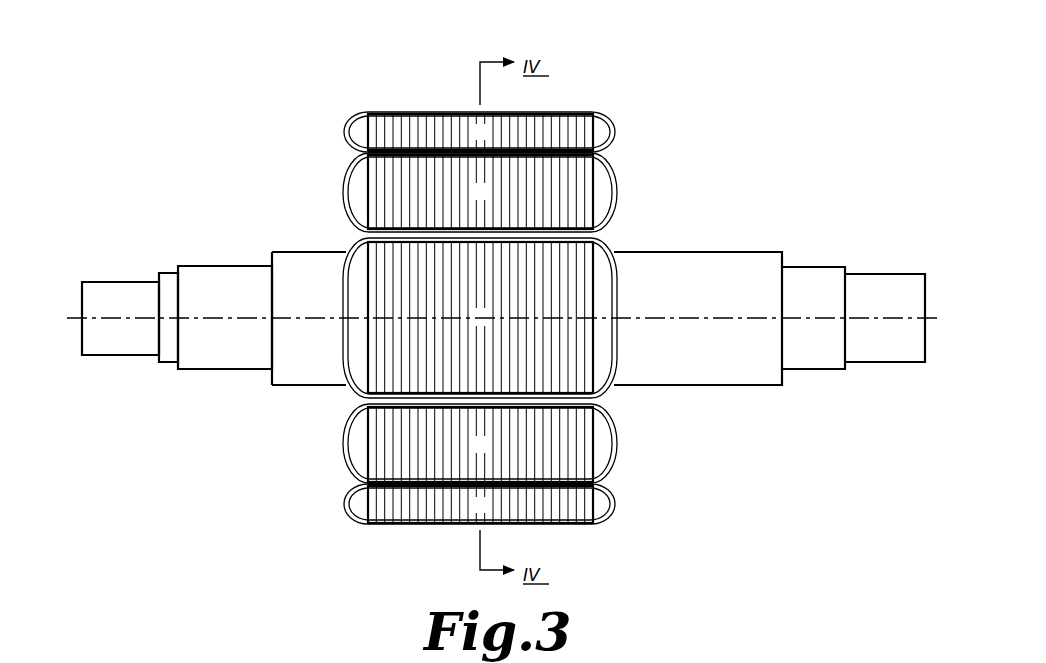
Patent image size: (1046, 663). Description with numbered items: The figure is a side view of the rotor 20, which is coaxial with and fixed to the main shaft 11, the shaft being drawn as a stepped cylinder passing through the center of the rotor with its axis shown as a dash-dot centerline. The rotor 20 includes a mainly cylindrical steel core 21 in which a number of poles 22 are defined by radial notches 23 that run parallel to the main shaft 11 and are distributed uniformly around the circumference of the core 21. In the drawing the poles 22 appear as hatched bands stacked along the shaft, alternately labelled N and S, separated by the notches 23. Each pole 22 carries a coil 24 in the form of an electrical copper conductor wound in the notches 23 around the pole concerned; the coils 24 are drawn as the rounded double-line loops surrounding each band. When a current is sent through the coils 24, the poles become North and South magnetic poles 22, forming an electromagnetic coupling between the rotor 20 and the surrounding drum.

The main shaft 11 is at (718, 288).
The rotor 20 is at (701, 84).
The steel core 21 is at (553, 182).
The poles 22 is at (418, 190).
The radial notches 23 is at (458, 150).
The coil 24 is at (618, 293).